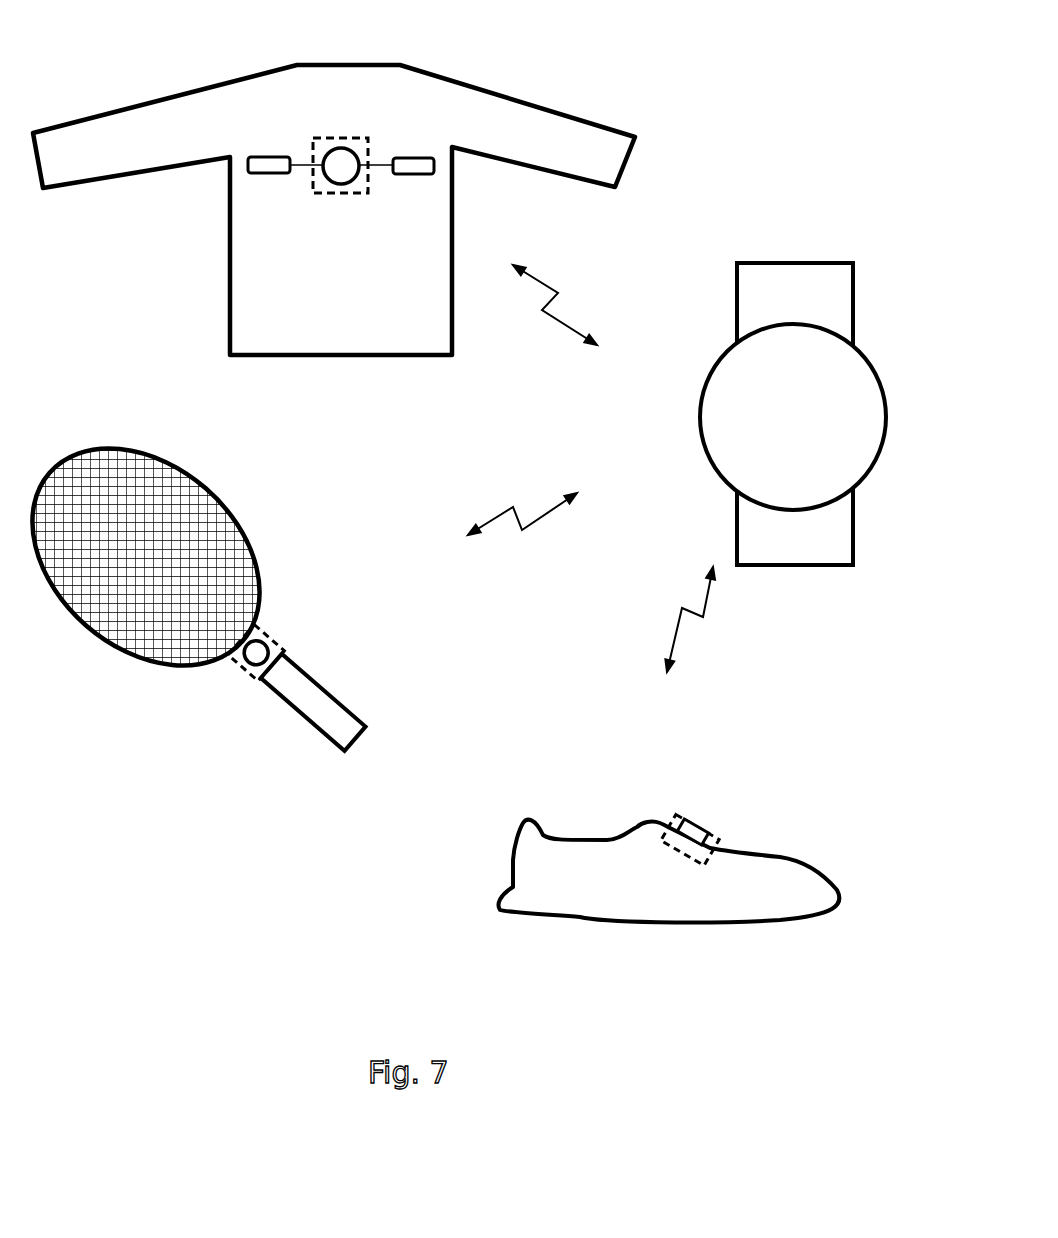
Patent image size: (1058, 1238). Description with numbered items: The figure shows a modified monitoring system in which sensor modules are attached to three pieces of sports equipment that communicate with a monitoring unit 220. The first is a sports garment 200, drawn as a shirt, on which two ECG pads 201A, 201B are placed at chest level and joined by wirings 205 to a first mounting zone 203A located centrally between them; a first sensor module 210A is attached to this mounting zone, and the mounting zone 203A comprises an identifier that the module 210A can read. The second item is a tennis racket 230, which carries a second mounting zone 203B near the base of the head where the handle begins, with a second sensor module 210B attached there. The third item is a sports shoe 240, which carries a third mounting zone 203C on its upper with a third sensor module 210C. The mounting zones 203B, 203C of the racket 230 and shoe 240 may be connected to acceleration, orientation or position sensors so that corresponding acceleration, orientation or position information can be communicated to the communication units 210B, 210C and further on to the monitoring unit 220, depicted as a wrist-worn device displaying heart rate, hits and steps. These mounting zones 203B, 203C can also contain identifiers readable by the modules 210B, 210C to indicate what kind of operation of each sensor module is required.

The sports garment 200 is at (655, 148).
The ECG pad 201A is at (247, 162).
The ECG pad 201B is at (413, 157).
The first mounting zone 203A is at (340, 147).
The wirings 205 is at (300, 165).
The first sensor module 210A is at (350, 150).
The monitoring unit 220 is at (702, 330).
The tennis racket 230 is at (312, 587).
The second mounting zone 203B is at (230, 672).
The second sensor module 210B is at (250, 677).
The sports shoe 240 is at (465, 915).
The third mounting zone 203C is at (683, 857).
The third sensor module 210C is at (700, 820).